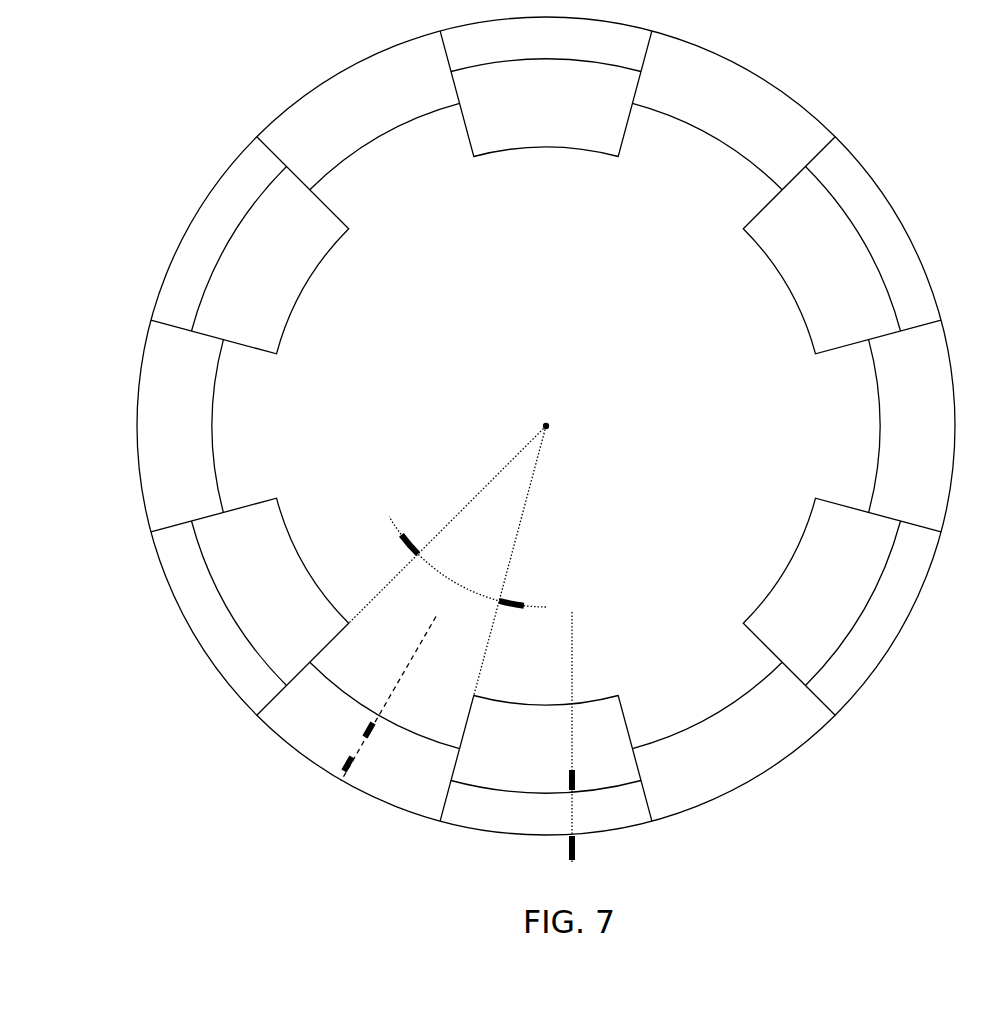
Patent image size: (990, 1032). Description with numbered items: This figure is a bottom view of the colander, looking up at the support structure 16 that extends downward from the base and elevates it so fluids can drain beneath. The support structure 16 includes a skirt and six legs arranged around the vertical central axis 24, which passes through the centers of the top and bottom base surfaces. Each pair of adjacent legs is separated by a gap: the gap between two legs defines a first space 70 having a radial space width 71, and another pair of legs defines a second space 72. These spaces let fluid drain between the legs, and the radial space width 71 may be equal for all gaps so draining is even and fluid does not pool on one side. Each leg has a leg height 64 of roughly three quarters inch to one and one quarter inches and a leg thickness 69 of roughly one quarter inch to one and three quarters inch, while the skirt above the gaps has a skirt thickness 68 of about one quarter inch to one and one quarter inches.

The support structure 16 is at (150, 282).
The second space 72 is at (170, 478).
The leg height 64 is at (485, 830).
The vertical central axis 24 is at (548, 425).
The first space 70 is at (382, 775).
The skirt thickness 68 is at (355, 738).
The leg thickness 69 is at (573, 812).
The radial space width 71 is at (447, 575).